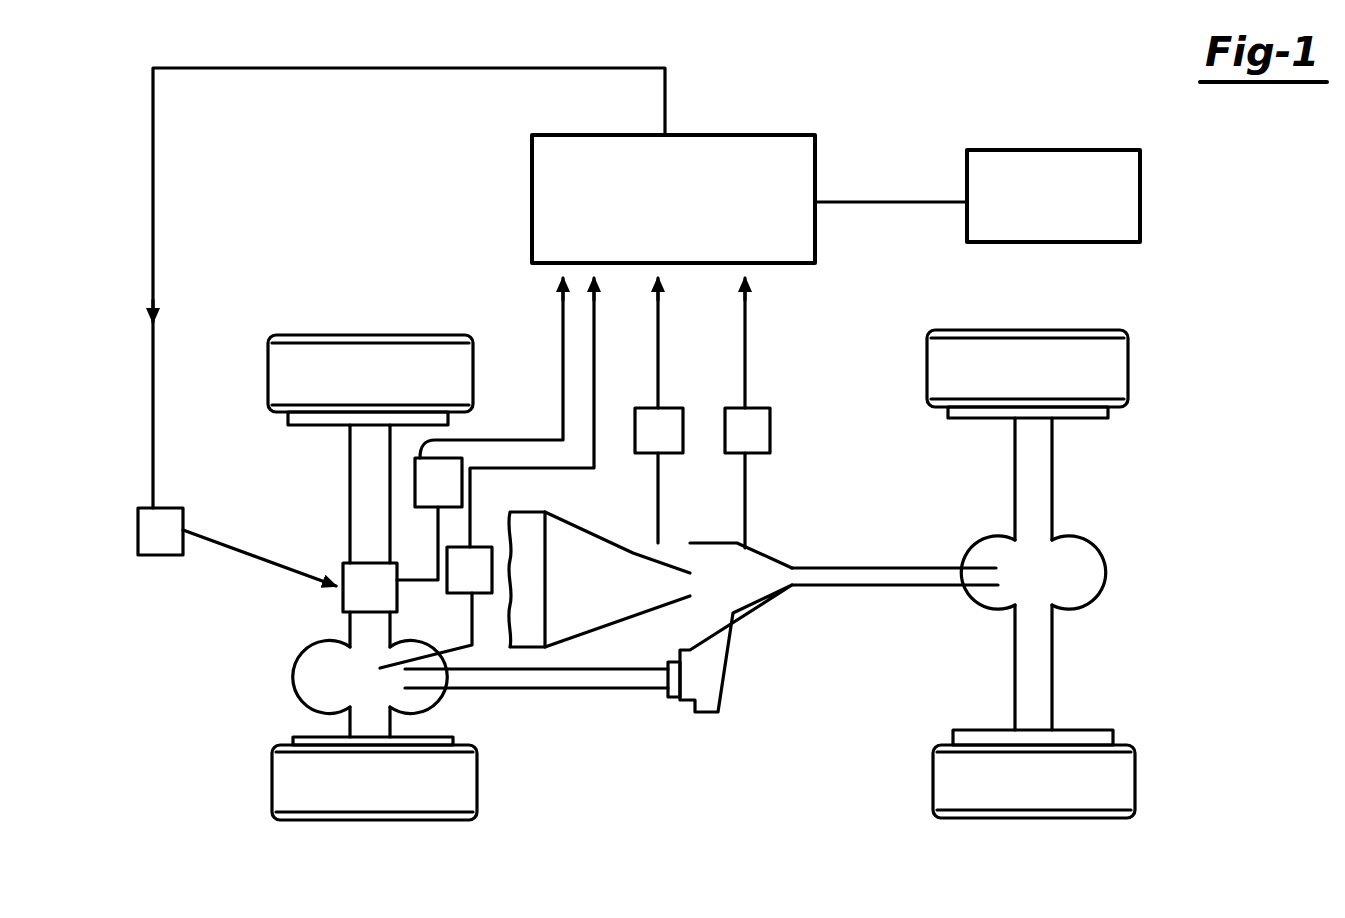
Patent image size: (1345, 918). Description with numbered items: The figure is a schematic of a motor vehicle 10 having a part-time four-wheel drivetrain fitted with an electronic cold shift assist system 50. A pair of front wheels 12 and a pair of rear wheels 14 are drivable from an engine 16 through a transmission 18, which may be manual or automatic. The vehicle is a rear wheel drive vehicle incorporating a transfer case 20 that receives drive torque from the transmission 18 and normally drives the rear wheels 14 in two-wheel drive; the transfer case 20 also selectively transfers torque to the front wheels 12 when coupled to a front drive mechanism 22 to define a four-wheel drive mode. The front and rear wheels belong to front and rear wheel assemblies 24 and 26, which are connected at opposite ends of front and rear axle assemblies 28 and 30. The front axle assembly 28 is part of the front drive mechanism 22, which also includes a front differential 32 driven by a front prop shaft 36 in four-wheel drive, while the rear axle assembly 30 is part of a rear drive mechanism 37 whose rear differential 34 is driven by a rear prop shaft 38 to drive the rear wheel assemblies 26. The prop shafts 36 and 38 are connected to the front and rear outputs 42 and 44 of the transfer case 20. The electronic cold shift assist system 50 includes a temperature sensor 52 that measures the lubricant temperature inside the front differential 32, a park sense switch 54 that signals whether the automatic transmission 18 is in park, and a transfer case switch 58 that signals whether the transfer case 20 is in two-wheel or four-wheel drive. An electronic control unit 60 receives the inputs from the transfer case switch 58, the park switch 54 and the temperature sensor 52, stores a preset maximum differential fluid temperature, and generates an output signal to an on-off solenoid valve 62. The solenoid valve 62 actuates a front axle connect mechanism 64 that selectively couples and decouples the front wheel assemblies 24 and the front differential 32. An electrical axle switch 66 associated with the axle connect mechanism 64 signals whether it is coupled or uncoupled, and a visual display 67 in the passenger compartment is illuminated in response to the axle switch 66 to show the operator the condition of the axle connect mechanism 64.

The vehicle 10 is at (808, 722).
The front wheels 12 is at (330, 357).
The rear wheels 14 is at (1073, 350).
The engine 16 is at (599, 564).
The transmission 18 is at (597, 602).
The transfer case 20 is at (762, 592).
The front drive mechanism 22 is at (243, 616).
The front wheel assemblies 24 is at (298, 432).
The rear wheel assemblies 26 is at (1105, 428).
The front axle assembly 28 is at (362, 481).
The rear axle assembly 30 is at (1037, 508).
The front differential 32 is at (347, 680).
The rear differential 34 is at (1057, 578).
The front prop shaft 36 is at (570, 678).
The rear drive mechanism 37 is at (1097, 555).
The rear prop shaft 38 is at (897, 563).
The front output 42 is at (672, 697).
The rear output 44 is at (795, 572).
The electronic cold shift assist system 50 is at (886, 92).
The temperature sensor 52 is at (458, 588).
The park sense switch 54 is at (670, 408).
The transfer case switch 58 is at (768, 410).
The electronic control unit 60 is at (800, 165).
The solenoid valve 62 is at (155, 530).
The front axle connect mechanism 64 is at (353, 610).
The axle switch 66 is at (430, 452).
The visual display 67 is at (1130, 190).